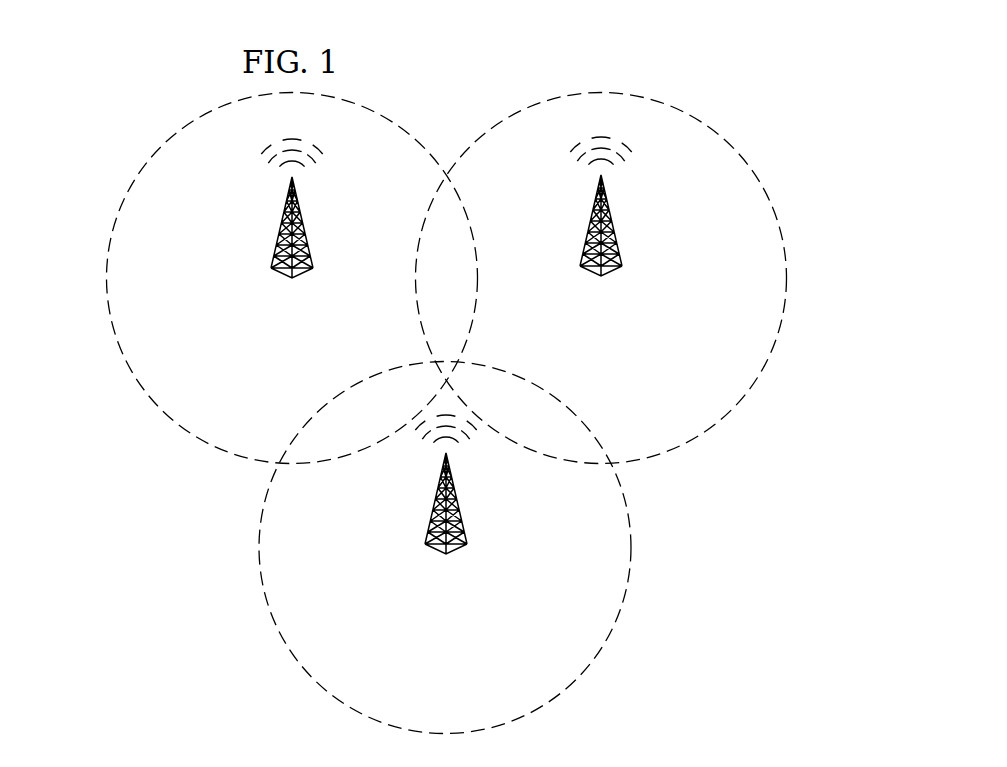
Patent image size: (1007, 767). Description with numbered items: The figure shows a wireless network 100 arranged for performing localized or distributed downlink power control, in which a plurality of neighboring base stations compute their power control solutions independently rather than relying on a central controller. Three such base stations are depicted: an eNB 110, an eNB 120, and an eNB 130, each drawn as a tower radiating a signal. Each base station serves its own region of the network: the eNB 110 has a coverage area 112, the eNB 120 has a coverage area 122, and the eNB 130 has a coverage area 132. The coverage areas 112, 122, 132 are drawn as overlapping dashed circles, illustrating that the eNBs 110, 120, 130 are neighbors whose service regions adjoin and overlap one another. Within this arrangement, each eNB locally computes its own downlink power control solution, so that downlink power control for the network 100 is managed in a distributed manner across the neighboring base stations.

The network 100 is at (780, 101).
The eNB 110 is at (255, 168).
The coverage area 112 is at (106, 280).
The eNB 120 is at (636, 167).
The coverage area 122 is at (786, 280).
The eNB 130 is at (410, 450).
The coverage area 132 is at (265, 590).